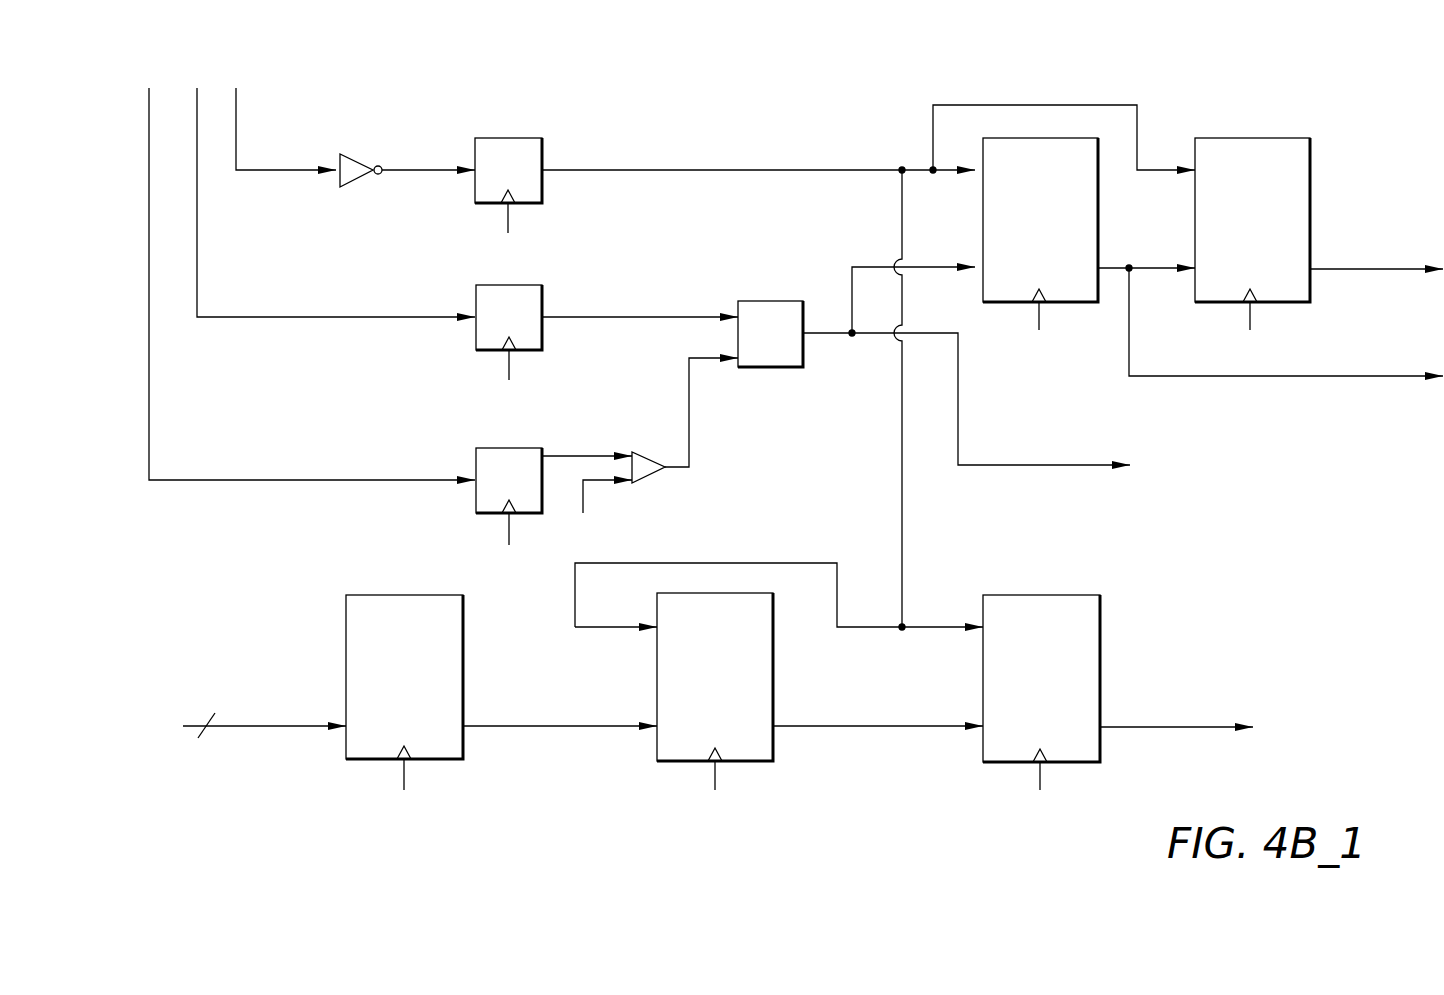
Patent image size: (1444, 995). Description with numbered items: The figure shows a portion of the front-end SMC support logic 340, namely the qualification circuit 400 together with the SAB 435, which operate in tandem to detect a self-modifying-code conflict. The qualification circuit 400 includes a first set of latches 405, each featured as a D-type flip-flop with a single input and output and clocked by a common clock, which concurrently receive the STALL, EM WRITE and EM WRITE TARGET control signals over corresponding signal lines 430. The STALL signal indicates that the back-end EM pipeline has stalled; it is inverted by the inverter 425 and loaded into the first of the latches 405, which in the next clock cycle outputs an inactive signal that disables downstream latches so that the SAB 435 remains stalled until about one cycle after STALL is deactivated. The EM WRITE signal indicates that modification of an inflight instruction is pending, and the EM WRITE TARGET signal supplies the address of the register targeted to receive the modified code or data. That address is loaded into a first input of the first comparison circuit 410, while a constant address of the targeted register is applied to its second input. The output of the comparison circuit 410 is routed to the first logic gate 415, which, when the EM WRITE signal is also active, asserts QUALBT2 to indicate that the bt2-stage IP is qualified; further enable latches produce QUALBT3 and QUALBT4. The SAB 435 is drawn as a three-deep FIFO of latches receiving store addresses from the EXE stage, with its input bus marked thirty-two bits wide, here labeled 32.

The front-end SMC support logic 340 is at (796, 452).
The qualification circuit 400 is at (796, 357).
The first set of latches 405 is at (835, 338).
The first comparison circuit 410 is at (668, 440).
The first logic gate 415 is at (770, 368).
The inverter 425 is at (364, 181).
The signal lines 430 is at (312, 318).
The SAB 435 is at (714, 690).
The bus width 32 is at (264, 737).